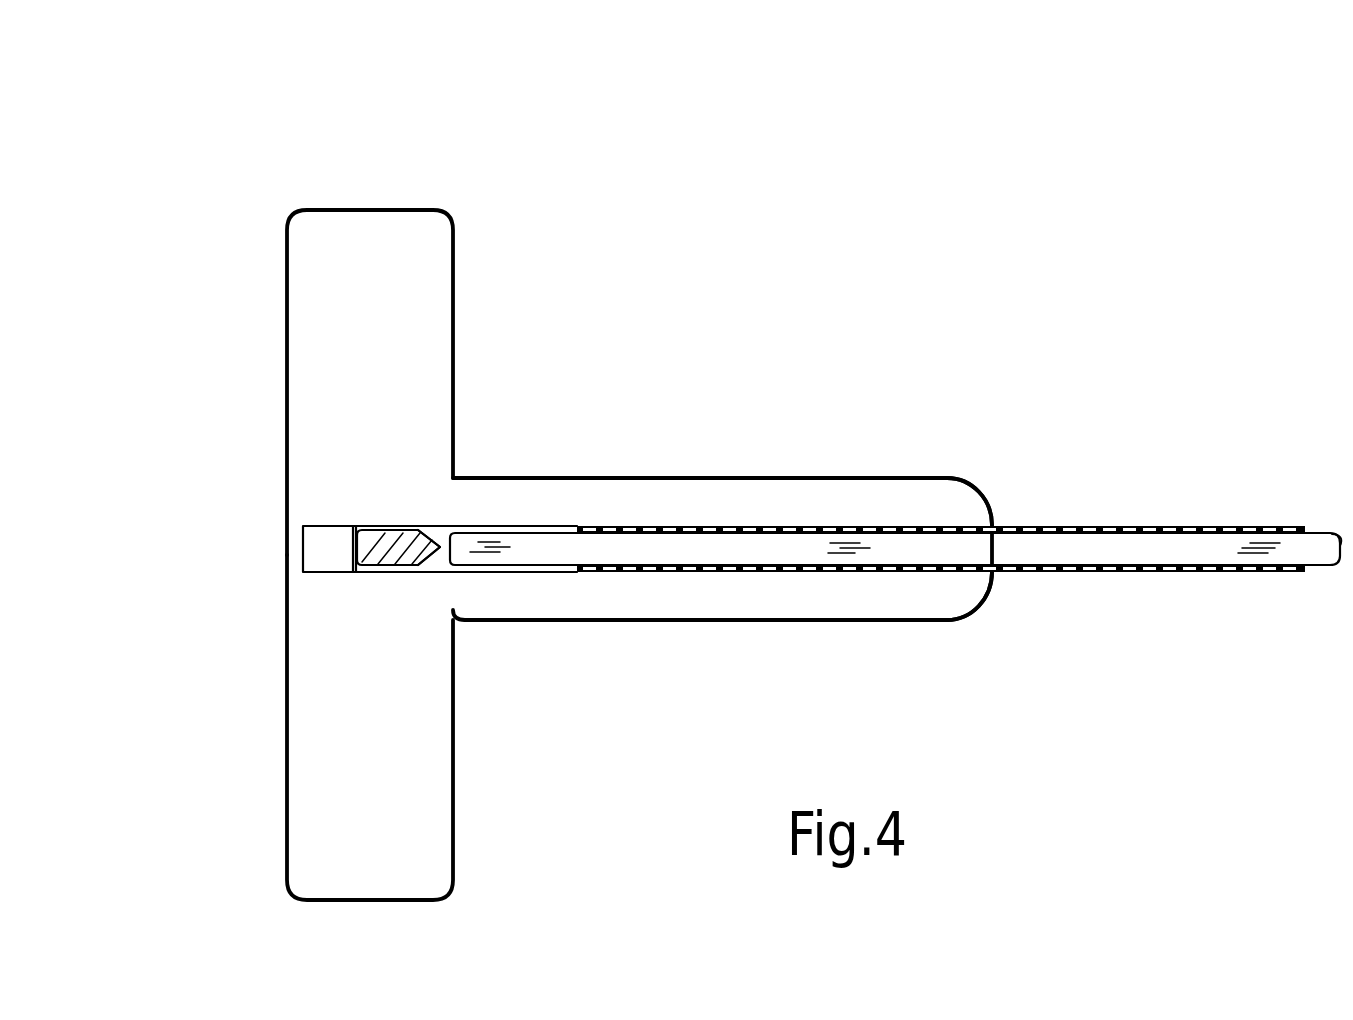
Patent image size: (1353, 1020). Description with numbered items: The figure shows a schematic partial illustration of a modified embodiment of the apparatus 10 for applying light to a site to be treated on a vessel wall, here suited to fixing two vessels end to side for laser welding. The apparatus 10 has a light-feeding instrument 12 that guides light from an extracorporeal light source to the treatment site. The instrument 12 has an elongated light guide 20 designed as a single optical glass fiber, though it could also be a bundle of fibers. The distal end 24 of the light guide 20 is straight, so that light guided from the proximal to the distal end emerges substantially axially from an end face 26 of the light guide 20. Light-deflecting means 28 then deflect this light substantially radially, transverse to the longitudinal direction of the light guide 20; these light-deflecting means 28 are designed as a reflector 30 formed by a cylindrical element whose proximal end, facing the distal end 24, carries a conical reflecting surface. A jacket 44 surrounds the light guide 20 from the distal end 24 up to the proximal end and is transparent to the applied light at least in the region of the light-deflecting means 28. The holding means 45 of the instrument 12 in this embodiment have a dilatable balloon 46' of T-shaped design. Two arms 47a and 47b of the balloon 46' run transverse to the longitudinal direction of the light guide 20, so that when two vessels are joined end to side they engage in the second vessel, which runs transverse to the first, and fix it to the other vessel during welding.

The apparatus 10 is at (857, 297).
The light-feeding instrument 12 is at (857, 462).
The light guide 20 is at (1063, 548).
The distal end 24 is at (518, 548).
The end face 26 is at (443, 542).
The light-deflecting means 28 is at (360, 518).
The reflector 30 is at (365, 570).
The jacket 44 is at (1178, 572).
The holding means 45 is at (690, 478).
The dilatable balloon 46' is at (706, 692).
The arm 47a is at (455, 255).
The arm 47b is at (455, 813).